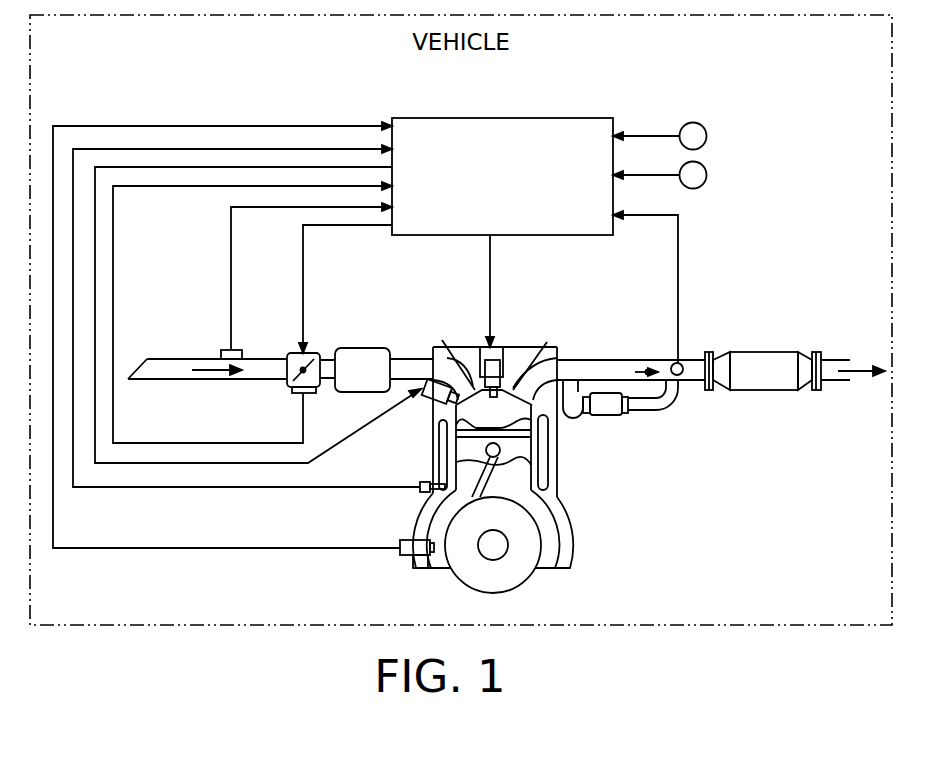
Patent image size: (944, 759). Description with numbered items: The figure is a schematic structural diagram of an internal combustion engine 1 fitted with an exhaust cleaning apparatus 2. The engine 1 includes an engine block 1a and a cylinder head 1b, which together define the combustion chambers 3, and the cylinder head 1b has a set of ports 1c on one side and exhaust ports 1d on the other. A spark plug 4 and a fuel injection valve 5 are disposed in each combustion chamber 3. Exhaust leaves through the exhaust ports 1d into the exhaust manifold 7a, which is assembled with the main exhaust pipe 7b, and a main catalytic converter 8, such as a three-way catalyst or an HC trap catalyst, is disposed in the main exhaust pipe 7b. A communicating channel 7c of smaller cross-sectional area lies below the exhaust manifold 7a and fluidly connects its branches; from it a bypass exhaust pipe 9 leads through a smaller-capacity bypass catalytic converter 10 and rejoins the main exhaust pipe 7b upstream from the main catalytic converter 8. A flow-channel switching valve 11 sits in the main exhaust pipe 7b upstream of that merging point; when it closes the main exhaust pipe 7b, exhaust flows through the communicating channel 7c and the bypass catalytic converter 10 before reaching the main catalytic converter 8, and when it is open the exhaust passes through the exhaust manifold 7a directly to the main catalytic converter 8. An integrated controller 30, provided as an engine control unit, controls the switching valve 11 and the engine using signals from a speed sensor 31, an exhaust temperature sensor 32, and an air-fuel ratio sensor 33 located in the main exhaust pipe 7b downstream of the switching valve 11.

The internal combustion engine 1 is at (592, 597).
The engine block 1a is at (573, 528).
The cylinder head 1b is at (468, 350).
The exhaust ports 1c is at (450, 373).
The exhaust ports 1d is at (543, 368).
The exhaust cleaning apparatus 2 is at (608, 296).
The combustion chambers 3 is at (472, 410).
The spark plugs 4 is at (498, 347).
The fuel injection valves 5 is at (418, 396).
The exhaust manifold 7a is at (585, 358).
The main exhaust pipe 7b is at (692, 364).
The communicating channel 7c is at (573, 418).
The main catalytic converter 8 is at (788, 390).
The bypass exhaust pipe 9 is at (672, 410).
The bypass catalytic converter 10 is at (605, 415).
The flow-channel switching valve 11 is at (649, 352).
The integrated controller 30 is at (609, 117).
The speed sensor 31 is at (707, 138).
The exhaust temperature sensor 32 is at (707, 177).
The air-fuel ratio sensor 33 is at (680, 375).